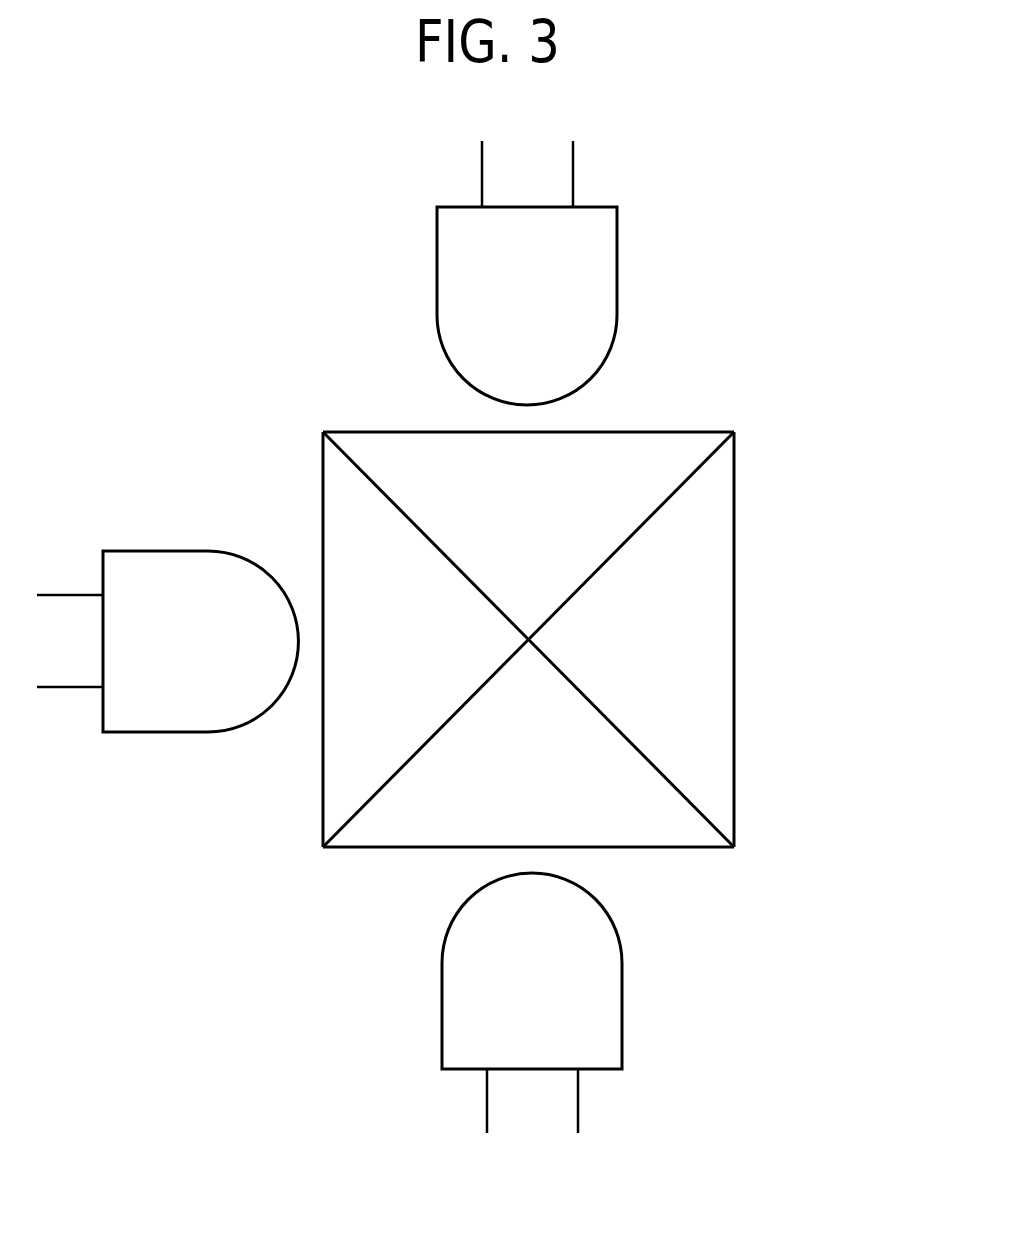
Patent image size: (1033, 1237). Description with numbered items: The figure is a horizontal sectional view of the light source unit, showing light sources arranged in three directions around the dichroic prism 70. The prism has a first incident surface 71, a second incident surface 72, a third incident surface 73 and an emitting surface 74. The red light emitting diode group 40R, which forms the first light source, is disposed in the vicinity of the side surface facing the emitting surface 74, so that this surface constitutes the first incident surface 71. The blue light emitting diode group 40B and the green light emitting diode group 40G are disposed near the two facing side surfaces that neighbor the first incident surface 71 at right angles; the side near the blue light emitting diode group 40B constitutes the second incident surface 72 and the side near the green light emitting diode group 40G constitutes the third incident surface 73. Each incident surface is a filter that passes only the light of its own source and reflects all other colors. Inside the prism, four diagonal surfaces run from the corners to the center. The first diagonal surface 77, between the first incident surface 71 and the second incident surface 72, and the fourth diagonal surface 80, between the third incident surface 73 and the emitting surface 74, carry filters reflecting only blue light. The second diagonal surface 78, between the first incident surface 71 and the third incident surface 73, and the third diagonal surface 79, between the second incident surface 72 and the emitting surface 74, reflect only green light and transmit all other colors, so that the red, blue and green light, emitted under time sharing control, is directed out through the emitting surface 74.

The dichroic prism 70 is at (506, 607).
The first incident surface 71 is at (323, 788).
The second incident surface 72 is at (372, 432).
The third incident surface 73 is at (690, 848).
The emitting surface 74 is at (735, 590).
The first diagonal surface 77 is at (385, 497).
The second diagonal surface 78 is at (372, 848).
The third diagonal surface 79 is at (672, 496).
The fourth diagonal surface 80 is at (658, 770).
The blue light emitting diode group 40B is at (612, 303).
The green light emitting diode group 40G is at (608, 998).
The red light emitting diode group 40R is at (182, 718).